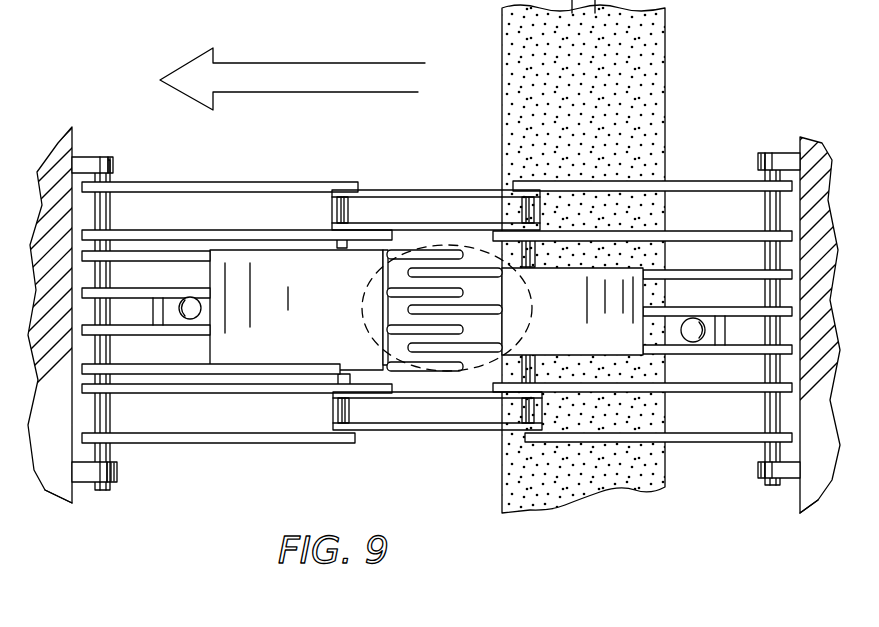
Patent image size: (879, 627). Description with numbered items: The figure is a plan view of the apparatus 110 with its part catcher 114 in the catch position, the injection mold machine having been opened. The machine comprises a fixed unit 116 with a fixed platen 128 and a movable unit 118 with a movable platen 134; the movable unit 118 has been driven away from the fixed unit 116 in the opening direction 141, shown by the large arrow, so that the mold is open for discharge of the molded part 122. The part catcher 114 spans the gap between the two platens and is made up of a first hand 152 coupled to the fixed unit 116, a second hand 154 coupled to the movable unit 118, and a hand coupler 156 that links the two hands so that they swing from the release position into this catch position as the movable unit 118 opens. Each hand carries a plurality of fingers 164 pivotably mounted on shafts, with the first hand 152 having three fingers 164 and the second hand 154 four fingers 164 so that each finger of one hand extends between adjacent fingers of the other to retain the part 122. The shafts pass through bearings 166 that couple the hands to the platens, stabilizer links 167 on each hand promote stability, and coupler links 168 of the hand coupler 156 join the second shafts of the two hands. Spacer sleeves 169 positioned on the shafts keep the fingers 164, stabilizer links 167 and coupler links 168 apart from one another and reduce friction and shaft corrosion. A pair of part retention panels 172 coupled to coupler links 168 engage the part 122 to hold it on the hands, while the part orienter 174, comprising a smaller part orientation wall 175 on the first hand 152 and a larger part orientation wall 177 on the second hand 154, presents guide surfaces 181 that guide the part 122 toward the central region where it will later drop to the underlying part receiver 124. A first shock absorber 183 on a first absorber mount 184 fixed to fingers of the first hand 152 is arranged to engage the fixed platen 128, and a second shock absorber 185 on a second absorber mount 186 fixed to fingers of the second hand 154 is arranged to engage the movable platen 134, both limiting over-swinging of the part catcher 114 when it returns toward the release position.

The apparatus 110 is at (108, 106).
The part catcher 114 is at (200, 163).
The fixed unit 116 is at (826, 150).
The movable unit 118 is at (46, 138).
The part 122 is at (366, 294).
The part receiver 124 is at (624, 148).
The fixed platen 128 is at (810, 505).
The movable platen 134 is at (60, 478).
The opening direction 141 is at (320, 62).
The first hand 152 is at (678, 500).
The second hand 154 is at (212, 478).
The hand coupler 156 is at (427, 468).
The fingers 164 is at (172, 297).
The bearings 166 is at (92, 157).
The stabilizer links 167 is at (238, 190).
The coupler links 168 is at (388, 188).
The spacer sleeves 169 is at (103, 205).
The part retention panels 172 is at (412, 225).
The part orienter 174 is at (372, 292).
The smaller part orientation wall 175 is at (590, 293).
The larger part orientation wall 177 is at (303, 348).
The guide surface 181 is at (372, 323).
The first shock absorber 183 is at (688, 318).
The first absorber mount 184 is at (700, 342).
The second shock absorber 185 is at (203, 307).
The second absorber mount 186 is at (180, 300).